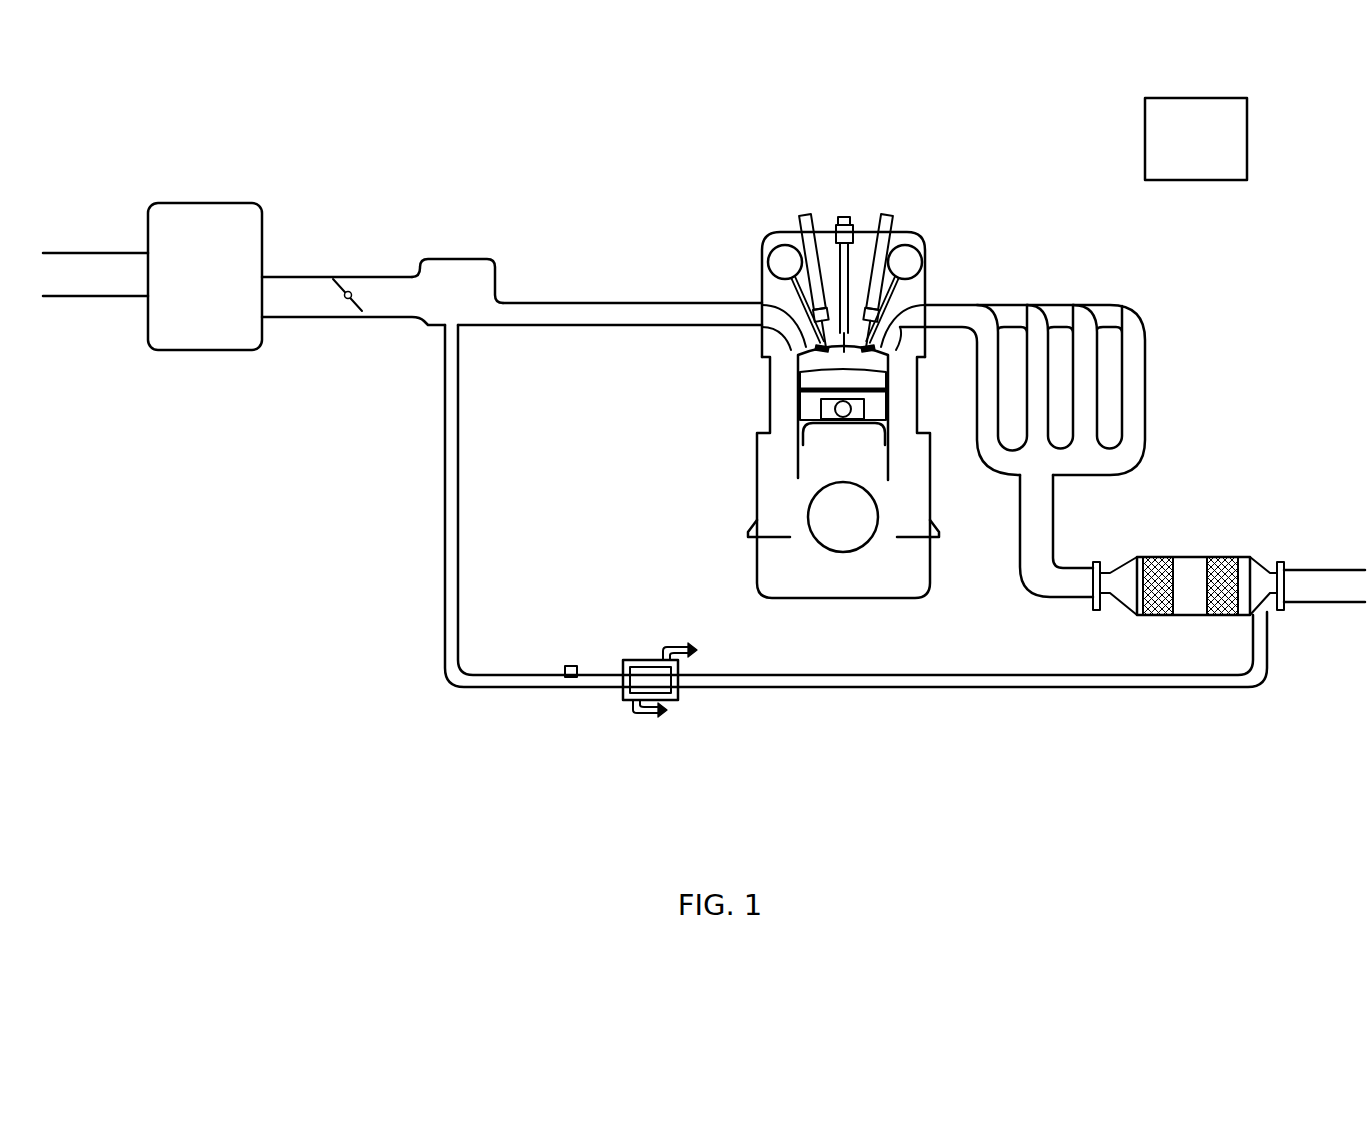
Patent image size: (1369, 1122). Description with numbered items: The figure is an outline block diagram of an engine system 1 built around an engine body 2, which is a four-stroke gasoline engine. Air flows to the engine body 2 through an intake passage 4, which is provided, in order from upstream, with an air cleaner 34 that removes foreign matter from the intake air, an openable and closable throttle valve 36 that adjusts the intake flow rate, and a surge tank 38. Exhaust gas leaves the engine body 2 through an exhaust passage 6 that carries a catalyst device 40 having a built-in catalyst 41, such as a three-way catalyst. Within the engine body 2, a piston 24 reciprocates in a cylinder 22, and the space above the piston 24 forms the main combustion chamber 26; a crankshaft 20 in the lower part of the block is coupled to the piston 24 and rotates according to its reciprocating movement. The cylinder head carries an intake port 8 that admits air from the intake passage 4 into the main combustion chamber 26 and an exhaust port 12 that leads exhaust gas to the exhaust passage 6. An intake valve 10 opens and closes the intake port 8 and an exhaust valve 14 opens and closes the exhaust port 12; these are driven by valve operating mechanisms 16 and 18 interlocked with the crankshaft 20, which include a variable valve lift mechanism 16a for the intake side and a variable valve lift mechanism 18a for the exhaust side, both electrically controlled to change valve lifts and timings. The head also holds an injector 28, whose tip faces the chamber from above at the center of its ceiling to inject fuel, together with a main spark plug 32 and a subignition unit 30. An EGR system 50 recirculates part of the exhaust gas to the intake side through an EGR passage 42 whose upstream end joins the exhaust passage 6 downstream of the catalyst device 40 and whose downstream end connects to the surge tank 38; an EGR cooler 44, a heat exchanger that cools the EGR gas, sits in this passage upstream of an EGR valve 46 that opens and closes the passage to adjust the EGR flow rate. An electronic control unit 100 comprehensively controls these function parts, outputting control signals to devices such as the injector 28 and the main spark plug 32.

The engine system 1 is at (540, 145).
The engine body 2 is at (880, 146).
The intake passage 4 is at (620, 303).
The exhaust passage 6 is at (1010, 303).
The intake port 8 is at (772, 315).
The intake valve 10 is at (800, 347).
The exhaust port 12 is at (912, 315).
The exhaust valve 14 is at (893, 342).
The valve operating mechanism 16 is at (747, 261).
The variable valve lift mechanism (intake S-VT) 16a is at (822, 348).
The valve operating mechanism 18 is at (942, 261).
The variable valve lift mechanism (exhaust S-VT) 18a is at (868, 348).
The crankshaft 20 is at (810, 507).
The cylinder 22 is at (800, 478).
The piston 24 is at (801, 413).
The main combustion chamber 26 is at (800, 371).
The injector 28 is at (848, 216).
The subignition unit 30 is at (884, 216).
The main spark plug 32 is at (806, 216).
The air cleaner 34 is at (197, 203).
The throttle valve 36 is at (348, 291).
The surge tank 38 is at (458, 259).
The catalyst device 40 is at (1188, 549).
The catalyst 41 is at (1222, 557).
The EGR passage 42 is at (1078, 690).
The EGR cooler 44 is at (662, 706).
The EGR valve 46 is at (571, 678).
The EGR system 50 is at (952, 742).
The electronic control unit (ECU) 100 is at (1195, 98).